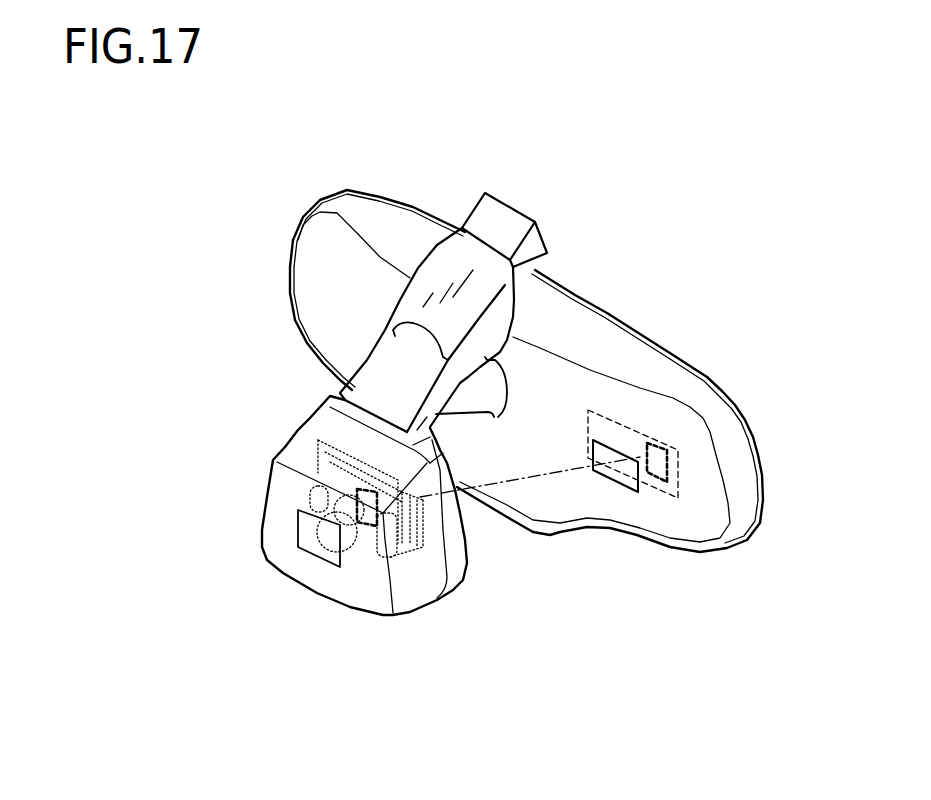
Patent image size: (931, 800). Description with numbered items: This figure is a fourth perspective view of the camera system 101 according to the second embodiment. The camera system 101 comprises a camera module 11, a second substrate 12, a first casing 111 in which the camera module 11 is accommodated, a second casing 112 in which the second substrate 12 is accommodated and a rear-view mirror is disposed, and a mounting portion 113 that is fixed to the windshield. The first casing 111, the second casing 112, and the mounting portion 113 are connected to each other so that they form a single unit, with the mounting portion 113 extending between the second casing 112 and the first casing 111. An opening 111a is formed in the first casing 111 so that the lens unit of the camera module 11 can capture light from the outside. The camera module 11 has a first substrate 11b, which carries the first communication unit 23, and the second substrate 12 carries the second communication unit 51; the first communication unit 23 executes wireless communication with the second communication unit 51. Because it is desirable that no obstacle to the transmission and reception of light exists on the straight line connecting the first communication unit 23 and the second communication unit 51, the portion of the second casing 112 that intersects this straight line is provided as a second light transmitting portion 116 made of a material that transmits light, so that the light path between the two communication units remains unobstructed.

The camera system 101 is at (276, 212).
The second casing 112 is at (378, 212).
The mounting portion 113 is at (497, 220).
The first casing 111 is at (310, 425).
The opening 111a is at (300, 540).
The camera module 11 is at (318, 470).
The first substrate 11b is at (428, 538).
The first communication unit 23 is at (367, 525).
The second light transmitting portion 116 is at (632, 492).
The second substrate 12 is at (677, 476).
The second communication unit 51 is at (667, 453).